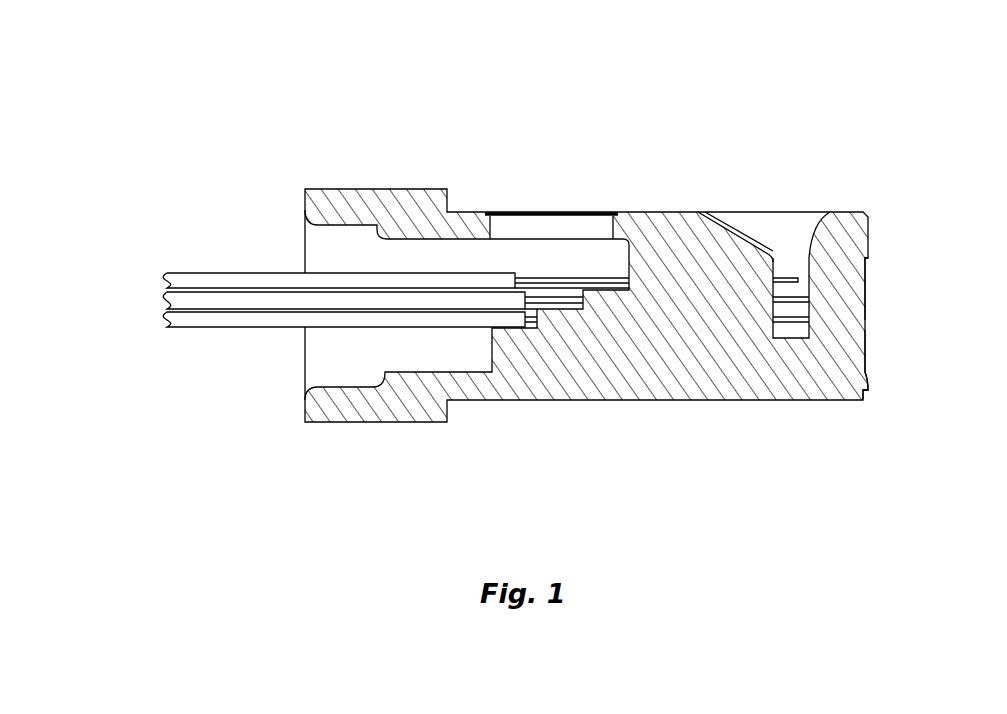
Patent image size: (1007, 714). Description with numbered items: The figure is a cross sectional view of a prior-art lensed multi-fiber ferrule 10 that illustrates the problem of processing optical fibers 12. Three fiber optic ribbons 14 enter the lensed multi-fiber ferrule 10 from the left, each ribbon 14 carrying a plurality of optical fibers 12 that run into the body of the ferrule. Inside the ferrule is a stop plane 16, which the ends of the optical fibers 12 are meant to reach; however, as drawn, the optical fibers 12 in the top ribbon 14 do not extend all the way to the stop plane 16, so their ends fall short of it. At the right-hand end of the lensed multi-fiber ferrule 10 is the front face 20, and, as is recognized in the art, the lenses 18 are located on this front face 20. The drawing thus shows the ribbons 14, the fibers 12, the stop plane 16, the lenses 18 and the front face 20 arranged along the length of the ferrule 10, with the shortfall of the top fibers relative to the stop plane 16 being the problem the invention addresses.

The lensed multi-fiber ferrule 10 is at (881, 118).
The optical fibers 12 is at (579, 280).
The fiber optic ribbons 14 is at (233, 282).
The stop plane 16 is at (805, 262).
The lenses 18 is at (870, 307).
The front face 20 is at (870, 345).